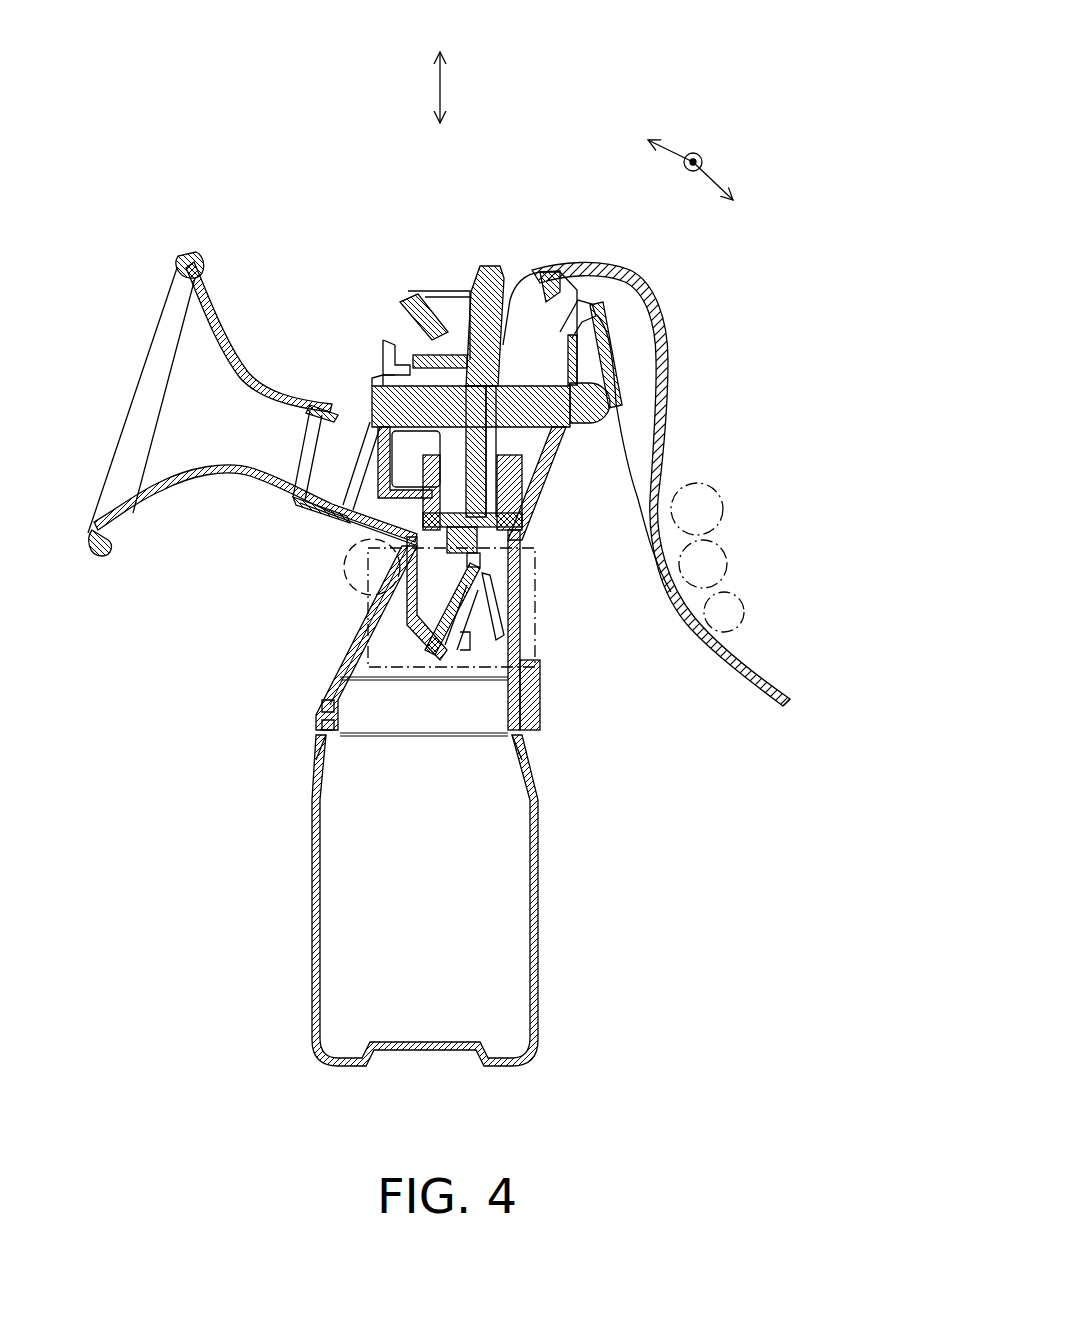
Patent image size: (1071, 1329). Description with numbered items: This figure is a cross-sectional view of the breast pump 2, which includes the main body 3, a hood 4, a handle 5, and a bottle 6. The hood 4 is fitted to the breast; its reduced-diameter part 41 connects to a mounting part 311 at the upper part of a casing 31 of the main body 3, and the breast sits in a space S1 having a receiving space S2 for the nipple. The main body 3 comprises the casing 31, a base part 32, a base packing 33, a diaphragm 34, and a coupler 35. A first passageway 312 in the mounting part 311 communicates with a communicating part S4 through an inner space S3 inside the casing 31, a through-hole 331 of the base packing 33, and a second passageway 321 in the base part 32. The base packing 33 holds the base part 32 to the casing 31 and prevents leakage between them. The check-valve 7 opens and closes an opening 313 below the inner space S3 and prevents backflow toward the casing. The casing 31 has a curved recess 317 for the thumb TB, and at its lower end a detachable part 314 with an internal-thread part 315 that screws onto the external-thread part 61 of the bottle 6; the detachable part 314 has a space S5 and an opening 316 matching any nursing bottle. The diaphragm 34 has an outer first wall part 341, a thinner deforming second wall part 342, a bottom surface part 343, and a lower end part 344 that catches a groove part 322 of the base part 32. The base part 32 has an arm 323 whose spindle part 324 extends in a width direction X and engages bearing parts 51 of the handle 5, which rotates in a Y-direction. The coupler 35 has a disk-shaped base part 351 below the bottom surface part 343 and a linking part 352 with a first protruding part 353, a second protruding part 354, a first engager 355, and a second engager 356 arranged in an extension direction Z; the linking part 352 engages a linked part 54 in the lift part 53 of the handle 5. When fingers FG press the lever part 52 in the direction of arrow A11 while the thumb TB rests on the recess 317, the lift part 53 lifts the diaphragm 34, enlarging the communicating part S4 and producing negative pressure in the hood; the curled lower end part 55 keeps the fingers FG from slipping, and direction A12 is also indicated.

The breast pump 2 is at (588, 100).
The main body 3 is at (310, 688).
The hood 4 is at (188, 250).
The handle 5 is at (776, 659).
The bottle 6 is at (537, 927).
The check-valve 7 is at (515, 592).
The casing 31 is at (537, 680).
The base part 32 is at (528, 436).
The base packing 33 is at (505, 537).
The diaphragm 34 is at (398, 378).
The coupler 35 is at (500, 250).
The reduced-diameter part 41 is at (270, 398).
The bearing parts 51 is at (595, 300).
The lever part 52 is at (667, 533).
The lift part 53 is at (600, 290).
The linked part 54 is at (446, 322).
The lower end part 55 is at (787, 690).
The external-thread part 61 is at (520, 707).
The mounting part 311 is at (375, 532).
The first passageway 312 is at (336, 455).
The opening 313 is at (437, 568).
The detachable part 314 is at (330, 708).
The internal-thread part 315 is at (330, 728).
The opening 316 is at (433, 706).
The recess 317 is at (372, 585).
The second passageway 321 is at (470, 485).
The groove part 322 is at (395, 378).
The arm 323 is at (616, 351).
The spindle part 324 is at (575, 318).
The through-hole 331 is at (487, 580).
The first wall part 341 is at (385, 375).
The second wall part 342 is at (400, 300).
The bottom surface part 343 is at (612, 333).
The lower end part 344 is at (567, 403).
The base part 351 is at (480, 420).
The linking part 352 is at (520, 270).
The first protruding part 353 is at (510, 300).
The second protruding part 354 is at (518, 295).
The first engager 355 is at (487, 267).
The second engager 356 is at (452, 352).
The space S1 is at (170, 415).
The receiving space S2 is at (290, 448).
The inner space S3 is at (428, 608).
The communicating part S4 is at (560, 381).
The space S5 is at (415, 676).
The thumb TB is at (340, 563).
The fingers FG is at (744, 596).
The arrow A11 is at (608, 583).
The axis A12 is at (535, 650).
The width direction X is at (702, 152).
The Y-direction Y is at (722, 172).
The extension direction Z is at (436, 88).